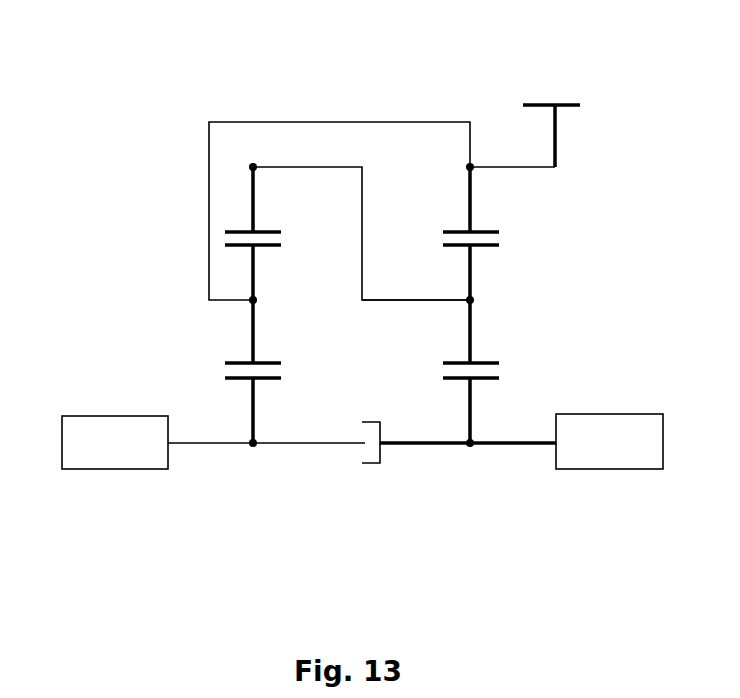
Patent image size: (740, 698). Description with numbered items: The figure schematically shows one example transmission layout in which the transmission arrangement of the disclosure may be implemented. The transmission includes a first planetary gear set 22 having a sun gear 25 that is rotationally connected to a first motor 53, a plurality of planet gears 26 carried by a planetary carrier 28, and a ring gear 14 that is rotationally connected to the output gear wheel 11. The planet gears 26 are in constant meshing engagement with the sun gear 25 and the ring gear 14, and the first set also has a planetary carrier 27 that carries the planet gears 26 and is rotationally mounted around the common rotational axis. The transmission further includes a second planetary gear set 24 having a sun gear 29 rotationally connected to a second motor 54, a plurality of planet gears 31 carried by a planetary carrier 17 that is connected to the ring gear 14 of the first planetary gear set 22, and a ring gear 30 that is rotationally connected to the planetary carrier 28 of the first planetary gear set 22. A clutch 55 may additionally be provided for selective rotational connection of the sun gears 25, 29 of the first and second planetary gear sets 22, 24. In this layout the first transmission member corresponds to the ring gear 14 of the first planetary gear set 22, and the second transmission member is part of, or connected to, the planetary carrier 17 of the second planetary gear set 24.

The output gear wheel 11 is at (553, 147).
The ring gear 14 is at (470, 197).
The planetary carrier 17 is at (361, 122).
The first planetary gear set 22 is at (477, 500).
The second planetary gear set 24 is at (243, 490).
The sun gear 25 is at (467, 410).
The planet gear 26 is at (473, 313).
The planetary carrier 27 is at (397, 300).
The planetary carrier 28 is at (209, 215).
The sun gear 29 is at (248, 413).
The ring gear 30 is at (253, 205).
The planet gear 31 is at (251, 333).
The first motor 53 is at (603, 440).
The second motor 54 is at (95, 442).
The clutch 55 is at (372, 466).